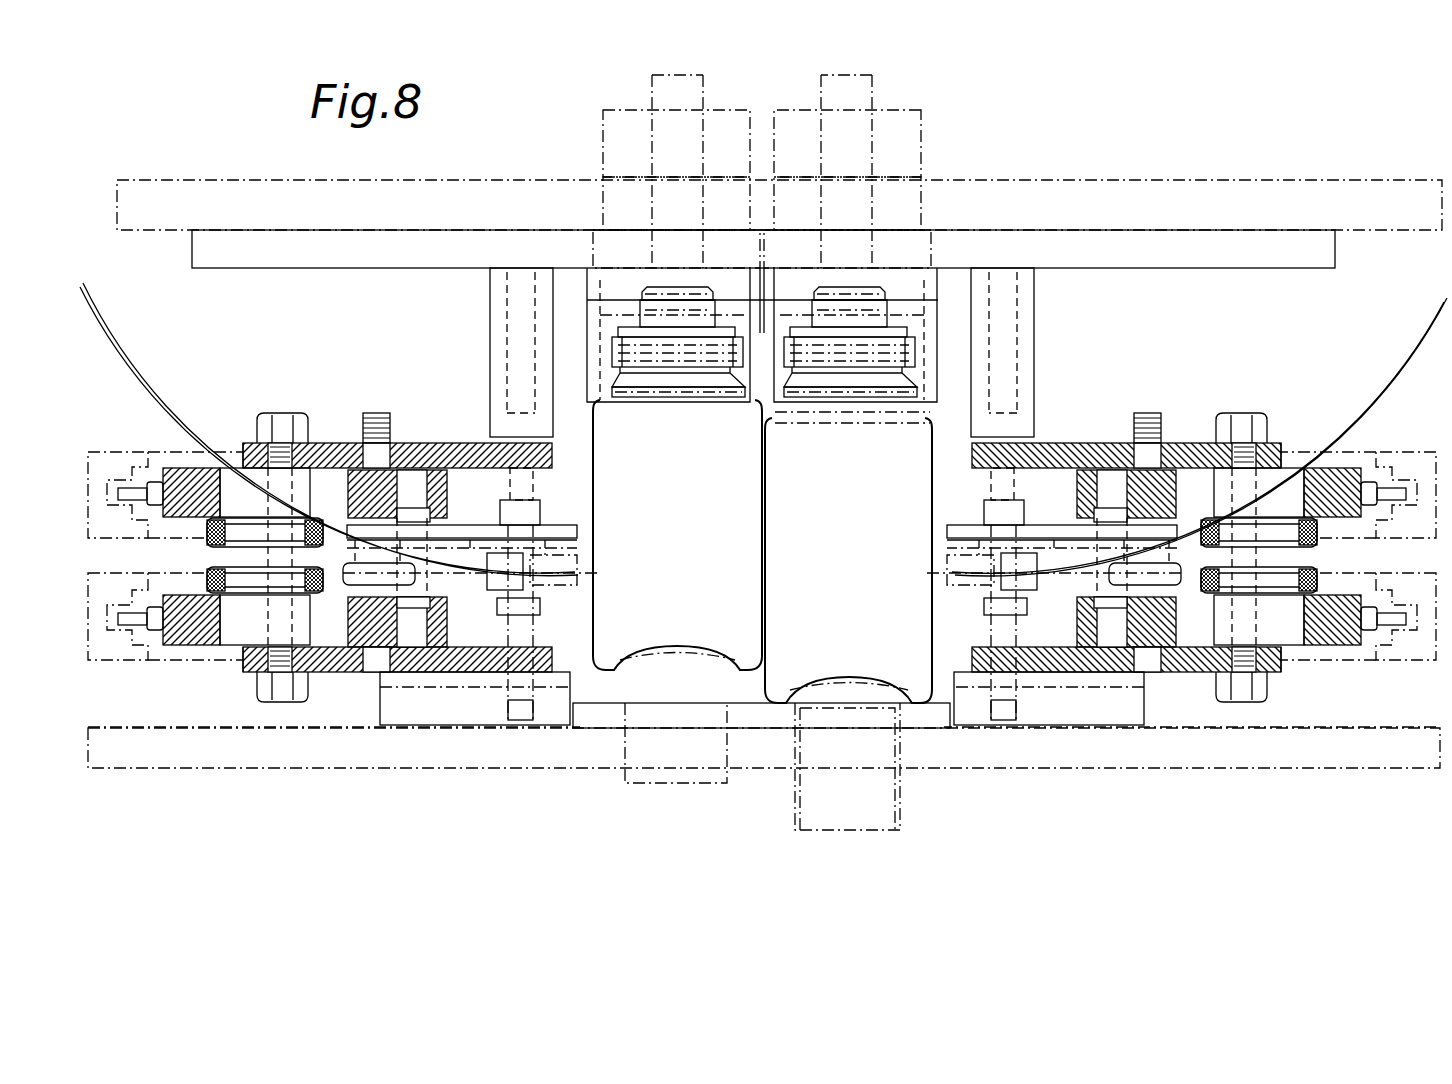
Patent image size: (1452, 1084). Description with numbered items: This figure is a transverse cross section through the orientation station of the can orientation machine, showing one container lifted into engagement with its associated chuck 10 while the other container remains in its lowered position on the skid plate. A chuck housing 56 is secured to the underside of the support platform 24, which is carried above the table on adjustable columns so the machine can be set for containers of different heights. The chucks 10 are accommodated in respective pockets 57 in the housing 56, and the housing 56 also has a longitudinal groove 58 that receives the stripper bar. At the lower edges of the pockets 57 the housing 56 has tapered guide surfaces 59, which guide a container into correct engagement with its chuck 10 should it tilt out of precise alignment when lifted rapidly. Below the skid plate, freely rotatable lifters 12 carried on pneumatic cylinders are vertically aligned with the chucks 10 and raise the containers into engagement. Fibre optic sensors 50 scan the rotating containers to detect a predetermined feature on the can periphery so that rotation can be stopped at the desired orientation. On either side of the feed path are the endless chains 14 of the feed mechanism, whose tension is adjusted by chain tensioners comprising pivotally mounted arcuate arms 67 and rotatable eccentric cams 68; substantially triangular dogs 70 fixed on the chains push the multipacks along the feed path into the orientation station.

The rotary chuck 10 is at (940, 387).
The lifter 12 is at (822, 788).
The endless chain 14 is at (150, 480).
The support platform 24 is at (1197, 252).
The fibre optic sensor 50 is at (583, 565).
The chuck housing 56 is at (937, 348).
The pocket 57 is at (940, 330).
The longitudinal groove 58 is at (765, 370).
The tapered guide surface 59 is at (935, 408).
The arcuate arm 67 is at (203, 468).
The eccentric cam 68 is at (237, 490).
The dog 70 is at (97, 452).